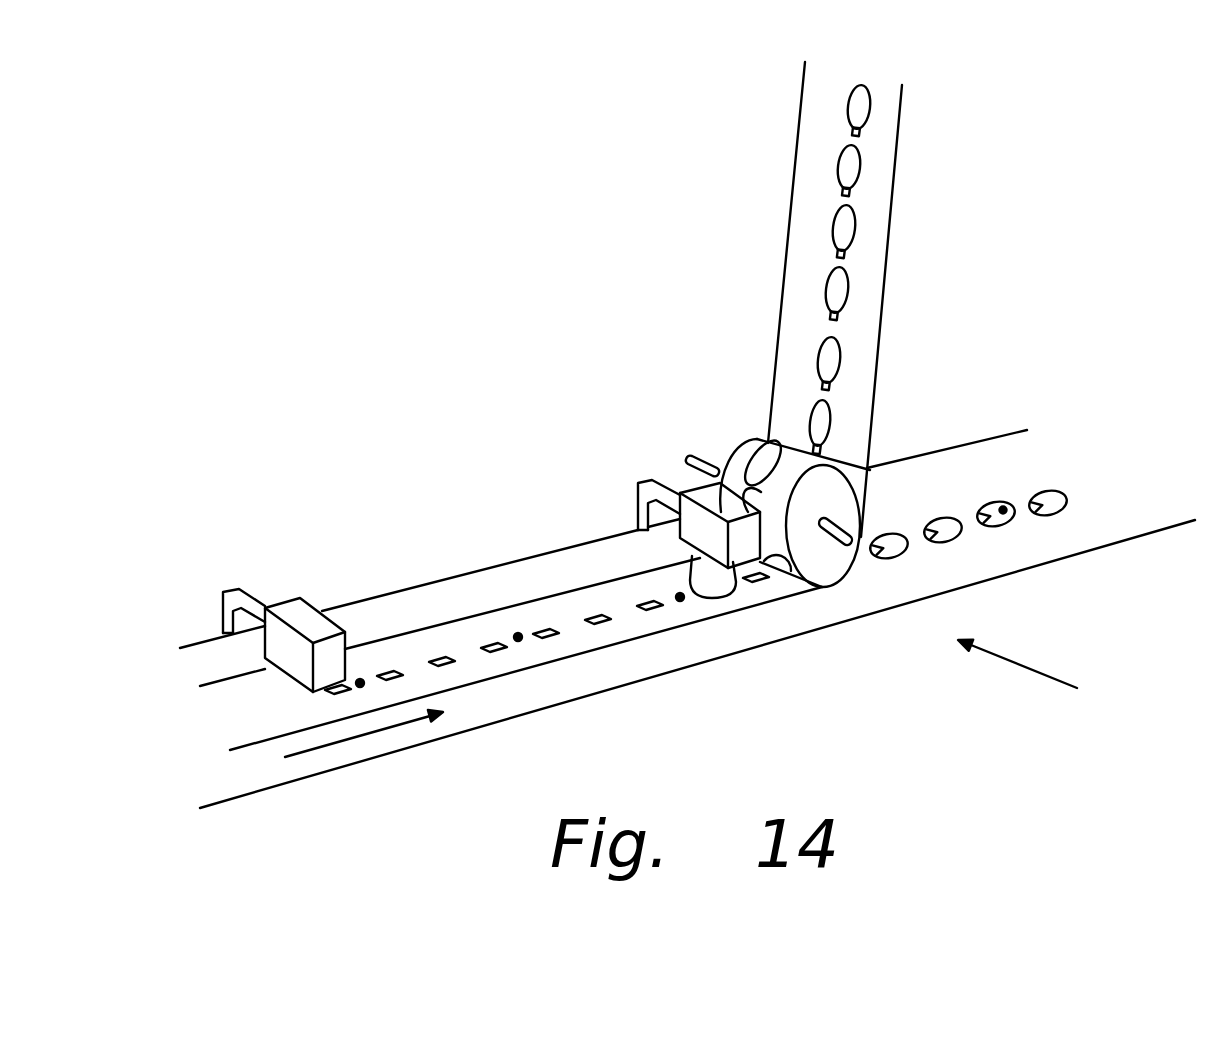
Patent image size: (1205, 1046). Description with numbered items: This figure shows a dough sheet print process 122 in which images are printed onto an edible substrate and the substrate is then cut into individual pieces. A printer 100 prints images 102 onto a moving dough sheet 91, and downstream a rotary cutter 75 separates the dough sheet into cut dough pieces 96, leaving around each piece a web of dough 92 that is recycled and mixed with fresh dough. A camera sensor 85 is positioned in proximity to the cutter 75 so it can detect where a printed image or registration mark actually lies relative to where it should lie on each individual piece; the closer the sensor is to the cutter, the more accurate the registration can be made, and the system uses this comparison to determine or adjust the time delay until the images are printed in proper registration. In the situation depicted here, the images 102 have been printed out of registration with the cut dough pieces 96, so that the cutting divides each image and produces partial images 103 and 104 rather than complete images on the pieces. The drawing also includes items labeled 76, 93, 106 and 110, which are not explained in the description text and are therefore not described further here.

The cutter 75 is at (740, 455).
The pocket 76 is at (770, 463).
The camera sensor 85 is at (697, 490).
The dough sheet 91 is at (490, 623).
The web of dough 92 is at (800, 290).
The containers 93 is at (835, 290).
The dough pieces 96 is at (1053, 493).
The printer 100 is at (312, 620).
The images 102 is at (388, 673).
The partial image 103 is at (980, 515).
The partial image 104 is at (843, 193).
The position mark 106 is at (518, 637).
The conveyor rail 110 is at (642, 663).
The print process 122 is at (1054, 680).